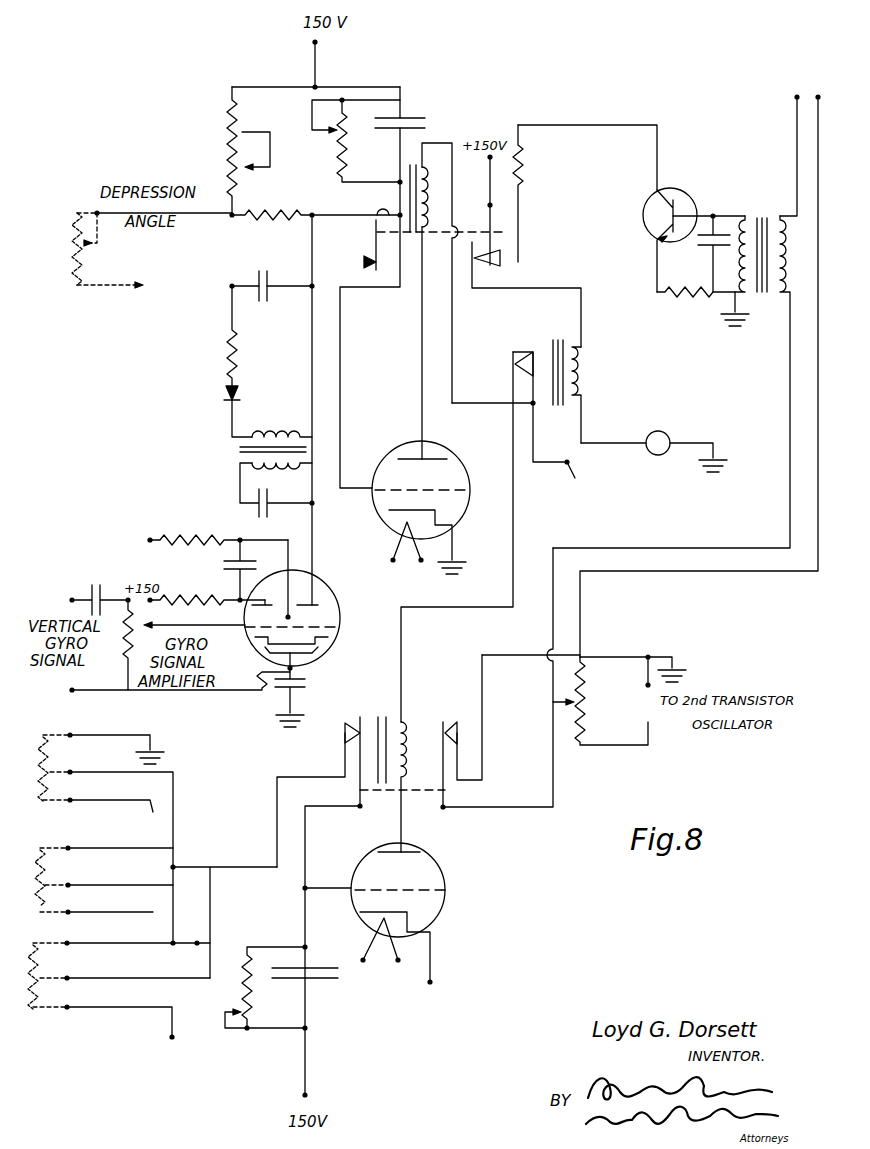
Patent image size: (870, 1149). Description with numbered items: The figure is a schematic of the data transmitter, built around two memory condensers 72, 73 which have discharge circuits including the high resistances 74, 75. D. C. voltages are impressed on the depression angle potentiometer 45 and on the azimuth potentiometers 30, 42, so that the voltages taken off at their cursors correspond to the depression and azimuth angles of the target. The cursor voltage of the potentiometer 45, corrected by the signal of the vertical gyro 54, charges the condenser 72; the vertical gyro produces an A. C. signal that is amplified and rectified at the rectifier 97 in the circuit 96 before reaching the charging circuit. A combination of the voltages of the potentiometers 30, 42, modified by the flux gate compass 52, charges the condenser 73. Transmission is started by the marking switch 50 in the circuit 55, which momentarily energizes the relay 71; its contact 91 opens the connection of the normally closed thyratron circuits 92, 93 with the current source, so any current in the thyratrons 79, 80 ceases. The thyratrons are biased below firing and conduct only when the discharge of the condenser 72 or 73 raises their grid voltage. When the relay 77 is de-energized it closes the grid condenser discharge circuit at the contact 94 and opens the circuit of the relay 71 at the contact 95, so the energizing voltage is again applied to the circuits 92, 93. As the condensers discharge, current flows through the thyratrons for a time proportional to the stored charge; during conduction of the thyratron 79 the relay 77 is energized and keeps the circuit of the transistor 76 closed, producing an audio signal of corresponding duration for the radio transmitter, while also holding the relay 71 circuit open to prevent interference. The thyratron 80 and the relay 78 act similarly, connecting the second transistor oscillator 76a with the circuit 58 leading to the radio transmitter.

The depression angle potentiometer 45 is at (95, 275).
The memory condenser 72 is at (406, 117).
The high resistance 74 is at (350, 165).
The relay 77 is at (432, 176).
The contact 94 is at (364, 262).
The contact 95 is at (495, 262).
The circuit 96 is at (311, 329).
The rectifier 97 is at (245, 397).
The thyratron circuit 92 is at (452, 353).
The contact 91 is at (530, 374).
The relay 71 is at (585, 378).
The circuit 55 is at (603, 443).
The marking switch 50 is at (672, 437).
The thyratron 79 is at (448, 471).
The thyratron circuit 93 is at (513, 537).
The circuit 58 is at (797, 140).
The transistor 76 is at (652, 213).
The second transistor oscillator 76a is at (648, 720).
The relay 78 is at (402, 728).
The thyratron 80 is at (448, 875).
The azimuth helmet potentiometer 42 is at (98, 837).
The azimuth linkage potentiometer 30 is at (156, 911).
The flux gate compass 52 is at (42, 1003).
The vertical gyro 54 is at (114, 645).
The high resistance 75 is at (256, 987).
The memory condenser 73 is at (309, 982).